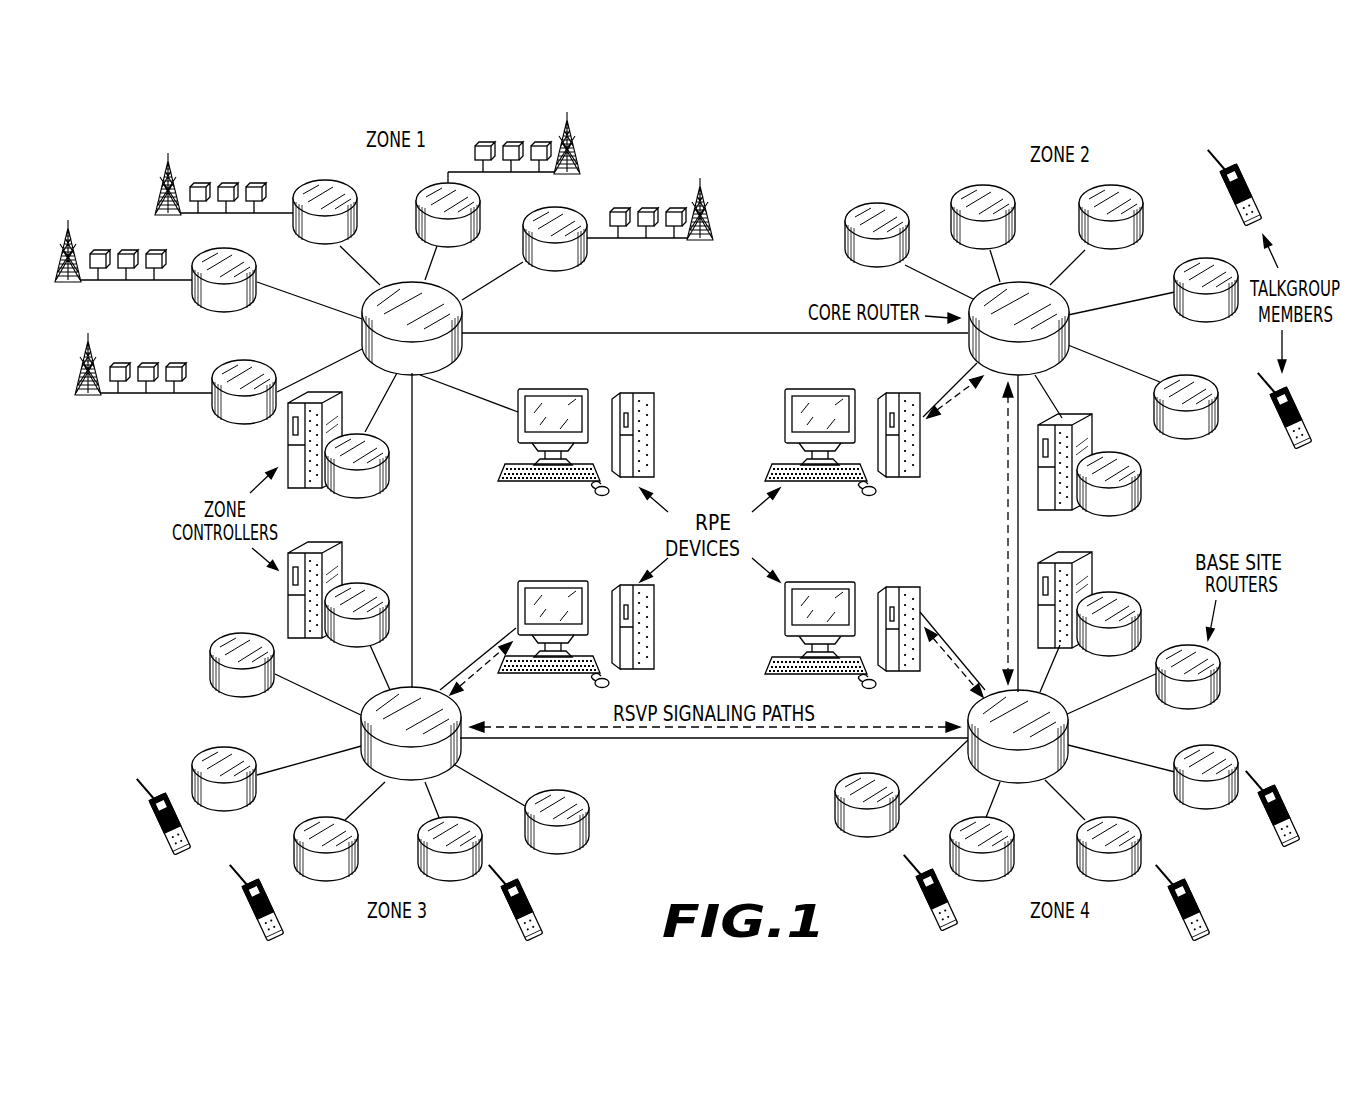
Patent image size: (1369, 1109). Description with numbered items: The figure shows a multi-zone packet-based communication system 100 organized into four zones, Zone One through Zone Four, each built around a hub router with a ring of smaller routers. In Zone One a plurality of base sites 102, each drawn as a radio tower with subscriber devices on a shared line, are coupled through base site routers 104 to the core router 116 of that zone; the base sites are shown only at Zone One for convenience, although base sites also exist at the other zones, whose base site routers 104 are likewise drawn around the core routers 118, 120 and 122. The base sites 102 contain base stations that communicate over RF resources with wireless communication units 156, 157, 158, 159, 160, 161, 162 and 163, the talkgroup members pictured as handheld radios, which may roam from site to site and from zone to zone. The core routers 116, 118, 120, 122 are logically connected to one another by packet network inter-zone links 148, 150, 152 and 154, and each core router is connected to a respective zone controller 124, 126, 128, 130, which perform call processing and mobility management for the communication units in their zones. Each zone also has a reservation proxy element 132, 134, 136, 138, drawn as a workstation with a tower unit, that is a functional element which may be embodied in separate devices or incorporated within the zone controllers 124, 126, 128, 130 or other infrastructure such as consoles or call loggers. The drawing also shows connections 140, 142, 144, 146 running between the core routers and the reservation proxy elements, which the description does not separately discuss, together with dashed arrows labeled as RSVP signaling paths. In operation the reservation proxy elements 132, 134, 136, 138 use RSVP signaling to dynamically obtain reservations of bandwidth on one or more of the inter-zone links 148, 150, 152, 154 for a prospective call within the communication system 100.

The packet-based communication system 100 is at (750, 862).
The base site 102 is at (240, 215).
The base site router 104 is at (333, 180).
The core router 116 is at (463, 321).
The core router 118 is at (1025, 284).
The core router 120 is at (396, 782).
The core router 122 is at (1069, 735).
The zone controller 124 is at (298, 490).
The zone controller 126 is at (1095, 426).
The zone controller 128 is at (342, 563).
The zone controller 130 is at (1095, 565).
The reservation proxy element 132 is at (656, 445).
The reservation proxy element 134 is at (921, 443).
The reservation proxy element 136 is at (656, 637).
The reservation proxy element 138 is at (905, 587).
The link between zone 1 router and RPE device 140 is at (480, 386).
The RSVP signaling path between core router and RPE device 142 is at (965, 375).
The RSVP signaling path between zone 3 router and RPE device 144 is at (476, 657).
The RSVP signaling path between zone 4 router and RPE device 146 is at (966, 657).
The inter-zone link 148 is at (722, 333).
The inter-zone link 150 is at (1019, 530).
The inter-zone link 152 is at (716, 742).
The inter-zone link 154 is at (413, 540).
The communication unit 156 is at (1259, 208).
The communication unit 157 is at (1306, 432).
The communication unit 158 is at (156, 828).
The communication unit 159 is at (281, 918).
The communication unit 160 is at (537, 918).
The communication unit 161 is at (955, 913).
The communication unit 162 is at (1201, 913).
The communication unit 163 is at (1286, 805).